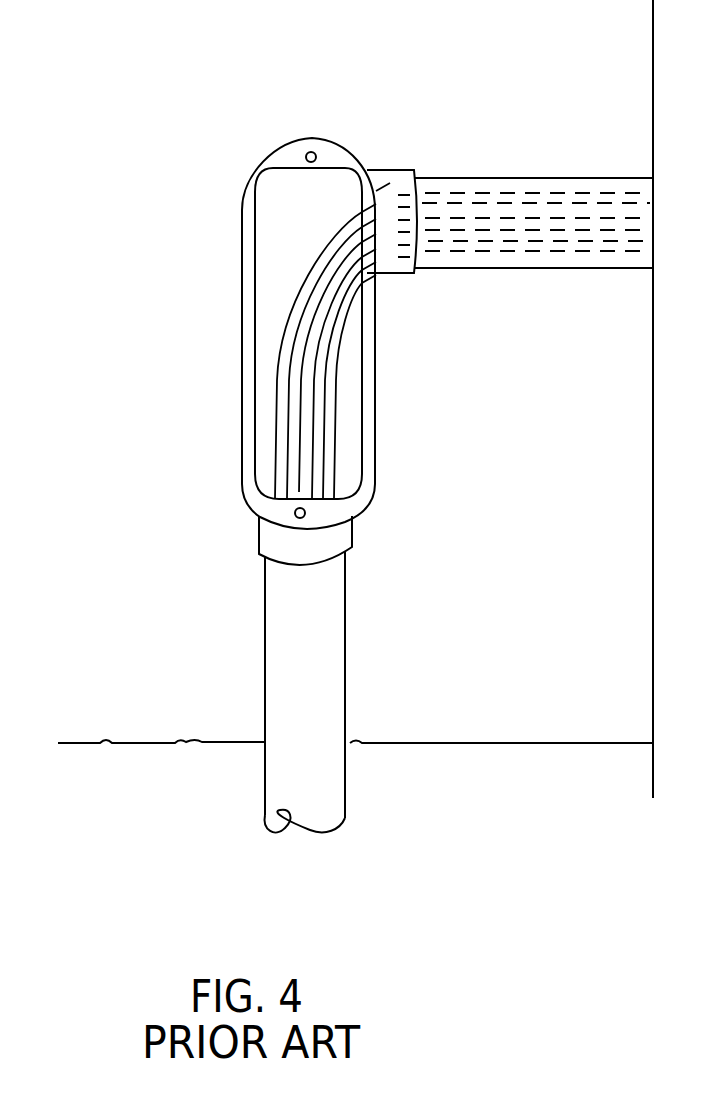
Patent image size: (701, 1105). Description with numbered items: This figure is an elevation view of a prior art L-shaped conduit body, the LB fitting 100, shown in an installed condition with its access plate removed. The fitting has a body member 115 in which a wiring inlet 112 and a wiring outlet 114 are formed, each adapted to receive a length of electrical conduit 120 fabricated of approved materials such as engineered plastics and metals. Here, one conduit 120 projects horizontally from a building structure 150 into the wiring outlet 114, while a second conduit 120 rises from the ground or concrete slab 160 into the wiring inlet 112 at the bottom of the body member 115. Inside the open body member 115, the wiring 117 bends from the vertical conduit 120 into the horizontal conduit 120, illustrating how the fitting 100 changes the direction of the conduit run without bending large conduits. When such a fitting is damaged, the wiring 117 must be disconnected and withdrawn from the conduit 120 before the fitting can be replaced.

The LB fitting 100 is at (232, 128).
The wiring inlet 112 is at (259, 535).
The wiring outlet 114 is at (390, 170).
The body member 115 is at (243, 333).
The wiring 117 is at (288, 483).
The electrical conduit 120 is at (535, 268).
The building structure 150 is at (652, 500).
The ground or concrete slab 160 is at (527, 743).